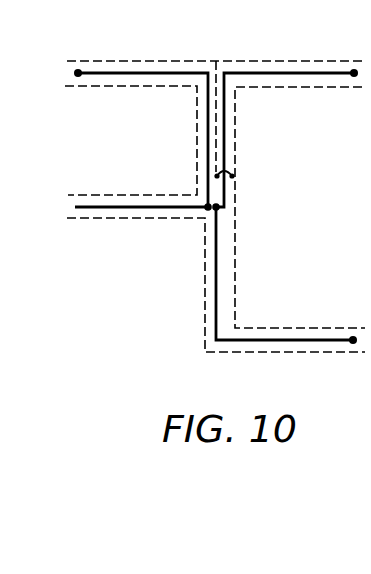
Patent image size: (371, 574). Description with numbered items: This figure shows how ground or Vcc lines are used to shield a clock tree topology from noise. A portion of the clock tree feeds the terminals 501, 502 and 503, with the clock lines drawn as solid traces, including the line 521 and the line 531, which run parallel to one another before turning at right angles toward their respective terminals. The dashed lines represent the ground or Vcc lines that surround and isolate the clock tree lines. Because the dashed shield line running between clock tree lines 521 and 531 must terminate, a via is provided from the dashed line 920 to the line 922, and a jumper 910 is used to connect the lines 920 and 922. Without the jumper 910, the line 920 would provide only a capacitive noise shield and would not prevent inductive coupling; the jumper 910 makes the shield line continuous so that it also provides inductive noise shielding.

The terminal 501 is at (353, 336).
The terminal 502 is at (354, 69).
The terminal 503 is at (78, 77).
The line 521 is at (223, 128).
The line 531 is at (208, 118).
The jumper 910 is at (227, 170).
The dashed line 920 is at (214, 141).
The line 922 is at (227, 255).